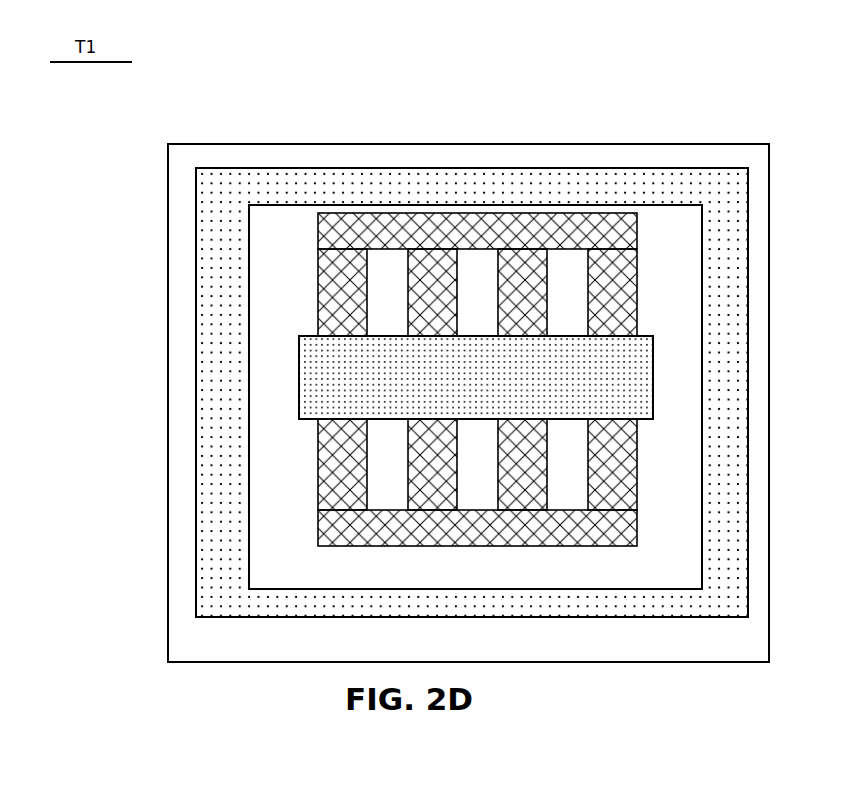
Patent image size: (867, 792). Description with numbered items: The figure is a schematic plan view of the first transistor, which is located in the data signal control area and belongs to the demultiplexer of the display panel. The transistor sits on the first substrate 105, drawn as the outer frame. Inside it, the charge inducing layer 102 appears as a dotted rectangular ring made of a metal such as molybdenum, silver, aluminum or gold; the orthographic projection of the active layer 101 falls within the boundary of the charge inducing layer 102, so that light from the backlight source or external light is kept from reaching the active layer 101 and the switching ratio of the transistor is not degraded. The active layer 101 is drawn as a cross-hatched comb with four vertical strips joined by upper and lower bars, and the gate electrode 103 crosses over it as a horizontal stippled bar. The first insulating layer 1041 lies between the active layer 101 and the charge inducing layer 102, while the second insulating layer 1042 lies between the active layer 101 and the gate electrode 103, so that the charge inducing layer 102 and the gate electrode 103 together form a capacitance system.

The active layer 101 is at (323, 242).
The charge inducing layer 102 is at (210, 282).
The gate electrode 103 is at (365, 377).
The second insulating layer 1042 is at (318, 366).
The first insulating layer 1041 is at (268, 455).
The first substrate 105 is at (178, 552).